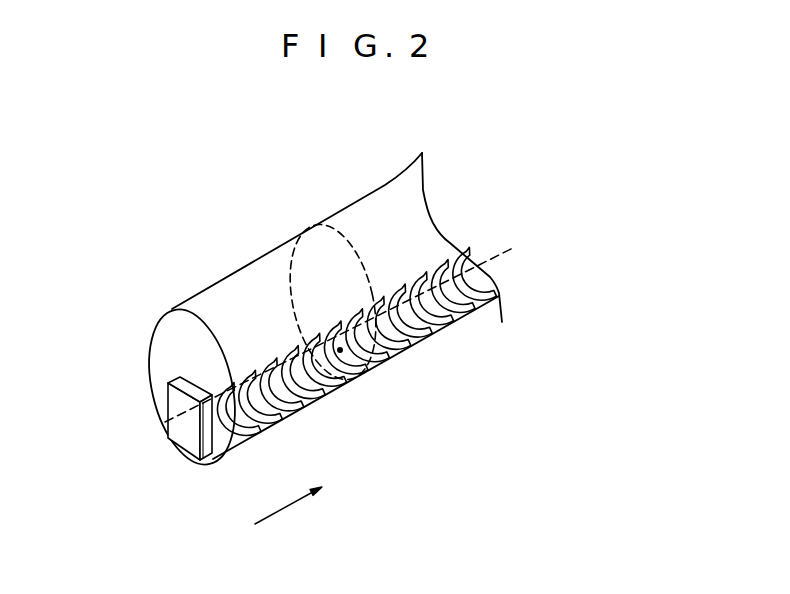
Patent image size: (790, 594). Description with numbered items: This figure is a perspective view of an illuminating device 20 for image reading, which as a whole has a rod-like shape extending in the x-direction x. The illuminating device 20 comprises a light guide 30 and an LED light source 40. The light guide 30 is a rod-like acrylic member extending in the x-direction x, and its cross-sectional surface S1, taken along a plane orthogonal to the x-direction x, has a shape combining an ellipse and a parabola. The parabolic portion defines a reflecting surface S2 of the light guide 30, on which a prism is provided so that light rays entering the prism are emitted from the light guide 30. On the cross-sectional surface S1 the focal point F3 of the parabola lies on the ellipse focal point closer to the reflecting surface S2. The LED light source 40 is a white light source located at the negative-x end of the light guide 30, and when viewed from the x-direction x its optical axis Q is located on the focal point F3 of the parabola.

The illuminating device 20 is at (118, 197).
The light guide 30 is at (242, 283).
The LED light source 40 is at (168, 402).
The focal point of the parabola F3 is at (369, 372).
The cross-sectional surface S1 is at (326, 233).
The reflecting surface S2 is at (273, 417).
The optical axis Q is at (507, 253).
The x-direction x is at (296, 499).